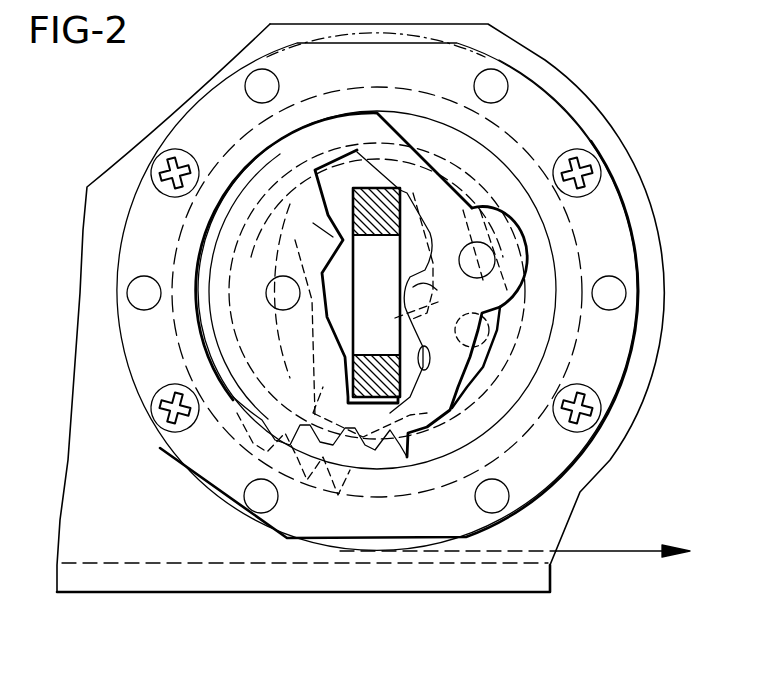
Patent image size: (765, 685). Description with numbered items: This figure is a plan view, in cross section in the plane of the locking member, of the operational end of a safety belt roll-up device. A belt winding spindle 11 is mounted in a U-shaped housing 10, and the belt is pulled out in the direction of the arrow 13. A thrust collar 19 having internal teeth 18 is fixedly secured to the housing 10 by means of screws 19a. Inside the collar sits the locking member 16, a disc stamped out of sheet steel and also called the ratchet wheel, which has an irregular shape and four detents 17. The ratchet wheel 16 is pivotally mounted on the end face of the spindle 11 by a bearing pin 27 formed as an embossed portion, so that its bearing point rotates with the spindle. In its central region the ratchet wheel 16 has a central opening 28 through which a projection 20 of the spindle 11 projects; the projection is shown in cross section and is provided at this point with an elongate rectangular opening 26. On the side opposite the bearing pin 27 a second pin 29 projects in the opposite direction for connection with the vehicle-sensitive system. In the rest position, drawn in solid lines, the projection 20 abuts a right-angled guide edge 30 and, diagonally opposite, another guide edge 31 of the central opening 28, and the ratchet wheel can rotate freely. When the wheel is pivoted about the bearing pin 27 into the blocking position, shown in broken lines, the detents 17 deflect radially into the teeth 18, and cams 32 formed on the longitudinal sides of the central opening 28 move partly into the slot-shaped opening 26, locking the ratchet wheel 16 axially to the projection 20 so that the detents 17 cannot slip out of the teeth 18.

The housing 10 is at (77, 508).
The belt winding spindle 11 is at (355, 165).
The arrow 13 is at (623, 548).
The locking member 16 is at (283, 218).
The detents 17 is at (323, 440).
The teeth 18 is at (173, 337).
The thrust collar 19 is at (613, 240).
The screws 19a is at (580, 157).
The projection 20 is at (355, 213).
The elongate rectangular opening 26 is at (363, 292).
The bearing pin 27 is at (282, 302).
The central opening 28 is at (428, 366).
The second pin 29 is at (477, 245).
The right-angled guide edge 30 is at (348, 372).
The guide edge 31 is at (405, 193).
The cams 32 is at (448, 290).